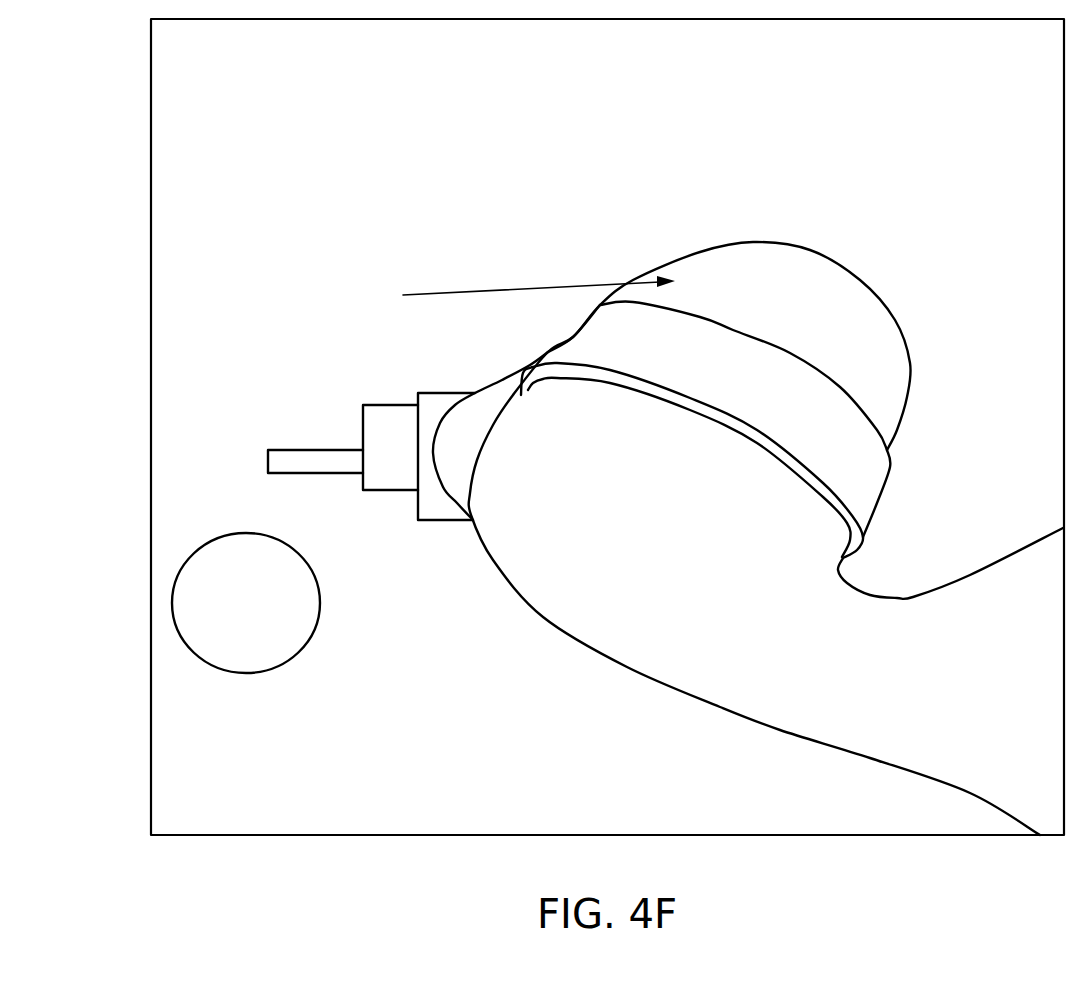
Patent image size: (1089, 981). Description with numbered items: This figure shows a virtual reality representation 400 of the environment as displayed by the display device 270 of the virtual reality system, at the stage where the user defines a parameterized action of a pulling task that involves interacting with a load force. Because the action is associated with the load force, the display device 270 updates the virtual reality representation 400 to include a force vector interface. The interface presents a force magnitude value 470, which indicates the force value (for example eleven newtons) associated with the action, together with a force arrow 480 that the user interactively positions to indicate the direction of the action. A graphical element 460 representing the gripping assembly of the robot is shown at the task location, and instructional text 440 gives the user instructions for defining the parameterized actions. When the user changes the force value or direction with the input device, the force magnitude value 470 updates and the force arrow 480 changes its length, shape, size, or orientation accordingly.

The display device 270 is at (113, 110).
The virtual reality representation 400 is at (145, 620).
The instructional text 440 is at (262, 353).
The graphical element 460 is at (743, 230).
The force magnitude value 470 is at (460, 191).
The force arrow 480 is at (570, 287).